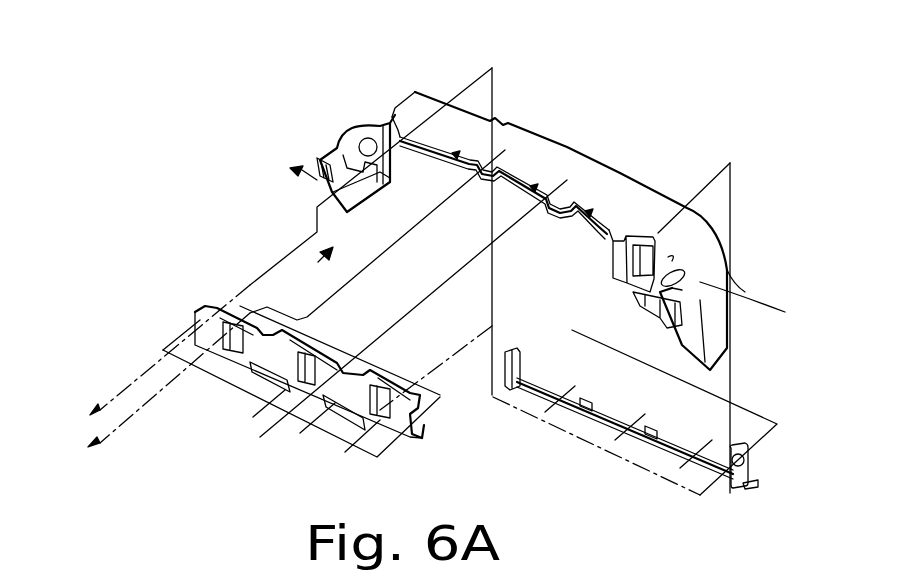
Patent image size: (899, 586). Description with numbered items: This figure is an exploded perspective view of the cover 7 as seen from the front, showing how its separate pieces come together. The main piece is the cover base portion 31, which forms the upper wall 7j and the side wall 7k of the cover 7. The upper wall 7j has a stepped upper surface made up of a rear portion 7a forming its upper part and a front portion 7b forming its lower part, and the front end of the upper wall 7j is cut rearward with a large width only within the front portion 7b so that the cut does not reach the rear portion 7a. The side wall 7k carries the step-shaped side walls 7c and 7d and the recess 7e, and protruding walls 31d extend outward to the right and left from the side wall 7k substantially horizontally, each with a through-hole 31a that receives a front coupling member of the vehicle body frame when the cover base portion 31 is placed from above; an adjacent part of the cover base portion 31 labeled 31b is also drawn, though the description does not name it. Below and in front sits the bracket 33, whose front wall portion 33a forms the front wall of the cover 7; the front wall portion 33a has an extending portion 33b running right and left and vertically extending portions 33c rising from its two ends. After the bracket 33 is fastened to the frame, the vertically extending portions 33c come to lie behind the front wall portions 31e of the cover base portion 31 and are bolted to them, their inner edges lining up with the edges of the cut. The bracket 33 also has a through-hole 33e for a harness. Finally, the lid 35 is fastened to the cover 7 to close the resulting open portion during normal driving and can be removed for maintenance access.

The cover 7 is at (645, 205).
The rear portion 7a is at (607, 182).
The front portion 7b is at (357, 126).
The side wall 7c is at (678, 254).
The side wall 7d is at (626, 266).
The recess 7e is at (660, 232).
The upper wall 7j is at (525, 150).
The side wall 7k is at (405, 108).
The cover base portion 31 is at (563, 150).
The through-hole 31a is at (318, 160).
The wall piece 31b is at (332, 191).
The protruding wall 31d is at (337, 146).
The front wall portion 31e is at (393, 150).
The bracket 33 is at (623, 423).
The front wall portion 33a is at (613, 450).
The extending portion 33b is at (680, 468).
The vertically extending portion 33c is at (520, 367).
The through-hole 33e is at (750, 462).
The lid 35 is at (203, 340).